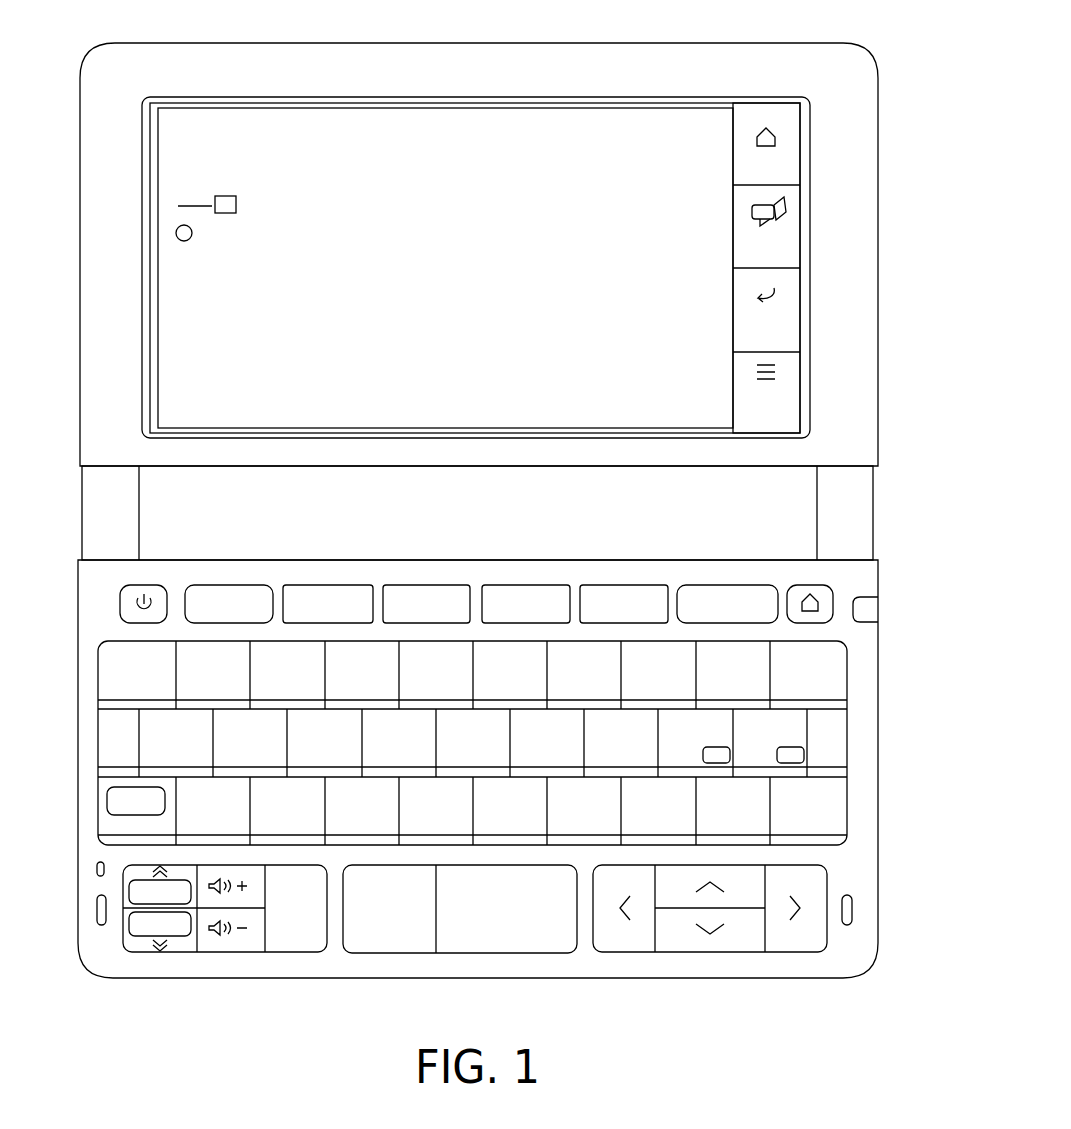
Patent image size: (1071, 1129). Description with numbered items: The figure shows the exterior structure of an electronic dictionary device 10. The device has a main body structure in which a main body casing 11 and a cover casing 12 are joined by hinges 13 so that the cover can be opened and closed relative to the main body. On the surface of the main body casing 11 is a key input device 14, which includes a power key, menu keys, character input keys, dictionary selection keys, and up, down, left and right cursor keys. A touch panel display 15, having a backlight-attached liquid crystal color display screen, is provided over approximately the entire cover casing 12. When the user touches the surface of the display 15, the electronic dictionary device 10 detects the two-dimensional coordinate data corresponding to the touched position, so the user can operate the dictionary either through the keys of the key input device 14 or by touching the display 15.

The electronic dictionary device 10 is at (905, 88).
The main body casing 11 is at (80, 634).
The cover casing 12 is at (80, 128).
The hinges 13 is at (84, 506).
The key input device 14 is at (892, 585).
The touch panel display 15 is at (488, 126).